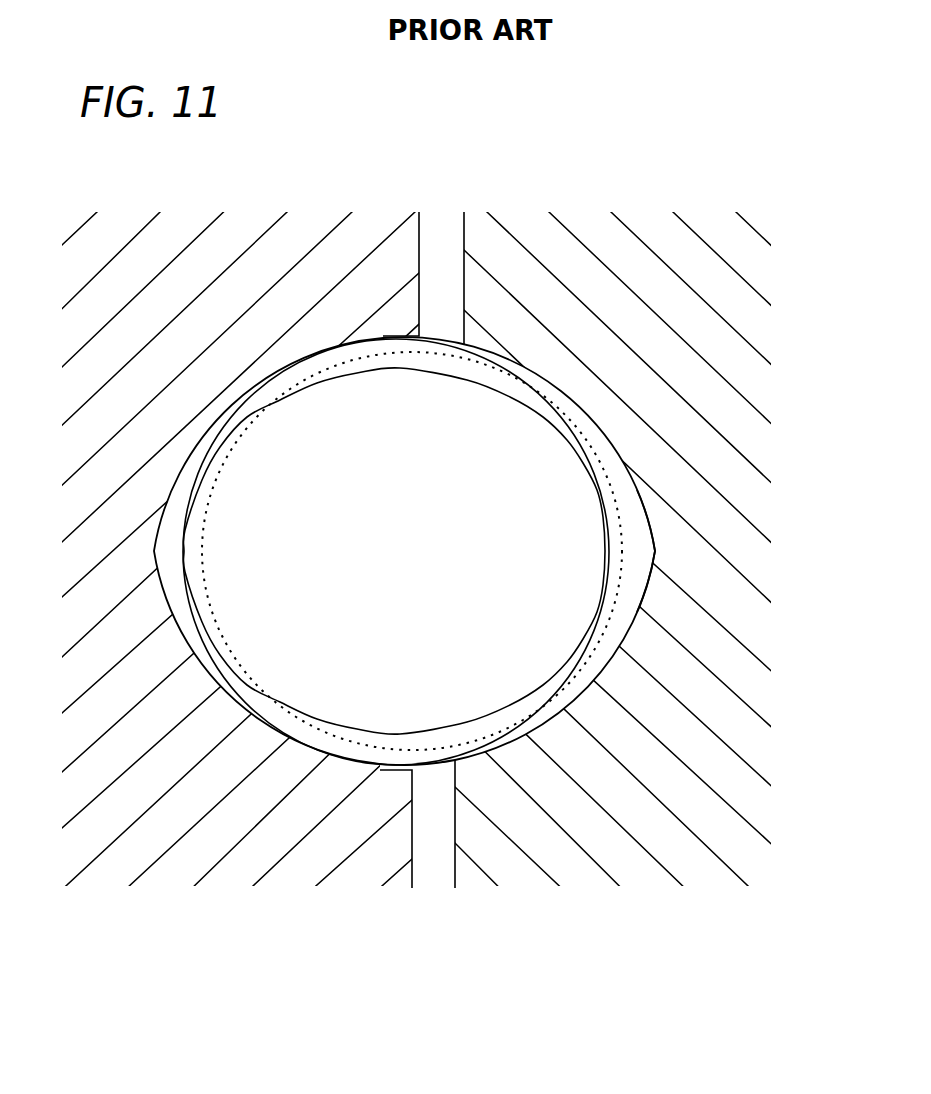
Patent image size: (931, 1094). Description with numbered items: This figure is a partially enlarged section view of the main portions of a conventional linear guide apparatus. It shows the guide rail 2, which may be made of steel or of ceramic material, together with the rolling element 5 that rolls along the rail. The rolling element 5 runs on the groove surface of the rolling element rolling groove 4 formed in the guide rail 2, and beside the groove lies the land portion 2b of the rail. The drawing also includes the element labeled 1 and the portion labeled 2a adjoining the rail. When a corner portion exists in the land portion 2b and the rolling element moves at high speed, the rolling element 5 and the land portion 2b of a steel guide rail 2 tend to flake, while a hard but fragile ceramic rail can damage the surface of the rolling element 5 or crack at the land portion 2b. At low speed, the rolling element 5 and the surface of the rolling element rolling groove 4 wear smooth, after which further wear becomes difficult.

The first housing half 1 is at (140, 425).
The guide rail 2 is at (732, 417).
The split gap (upper) 2a is at (463, 238).
The land portion 2b is at (477, 339).
The rolling element rolling groove 4 is at (646, 522).
The rolling element 5 is at (285, 623).